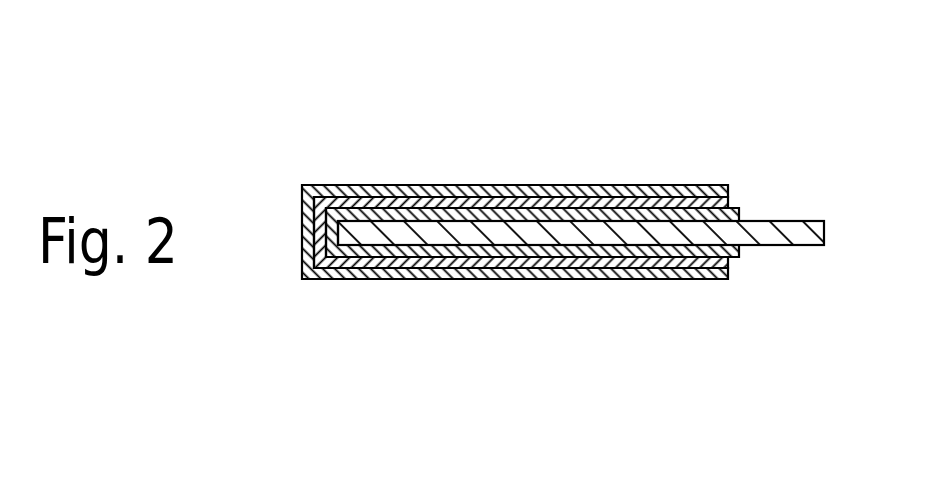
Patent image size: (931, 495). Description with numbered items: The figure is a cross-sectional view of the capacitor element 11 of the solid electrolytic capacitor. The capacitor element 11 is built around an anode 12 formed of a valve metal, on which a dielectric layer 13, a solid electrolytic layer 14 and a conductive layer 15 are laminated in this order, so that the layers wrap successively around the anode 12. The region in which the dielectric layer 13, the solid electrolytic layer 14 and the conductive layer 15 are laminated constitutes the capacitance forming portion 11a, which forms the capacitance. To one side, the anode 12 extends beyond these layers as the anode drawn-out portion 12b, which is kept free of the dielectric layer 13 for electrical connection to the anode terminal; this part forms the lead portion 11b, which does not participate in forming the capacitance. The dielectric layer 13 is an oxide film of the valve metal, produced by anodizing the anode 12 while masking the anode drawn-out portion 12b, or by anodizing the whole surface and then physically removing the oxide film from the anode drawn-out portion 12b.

The capacitor element 11 is at (301, 107).
The capacitance forming portion 11a is at (728, 167).
The lead portion 11b is at (825, 167).
The anode 12 is at (523, 235).
The anode drawn-out portion 12b is at (825, 245).
The dielectric layer 13 is at (464, 254).
The solid electrolytic layer 14 is at (412, 264).
The conductive layer 15 is at (360, 276).